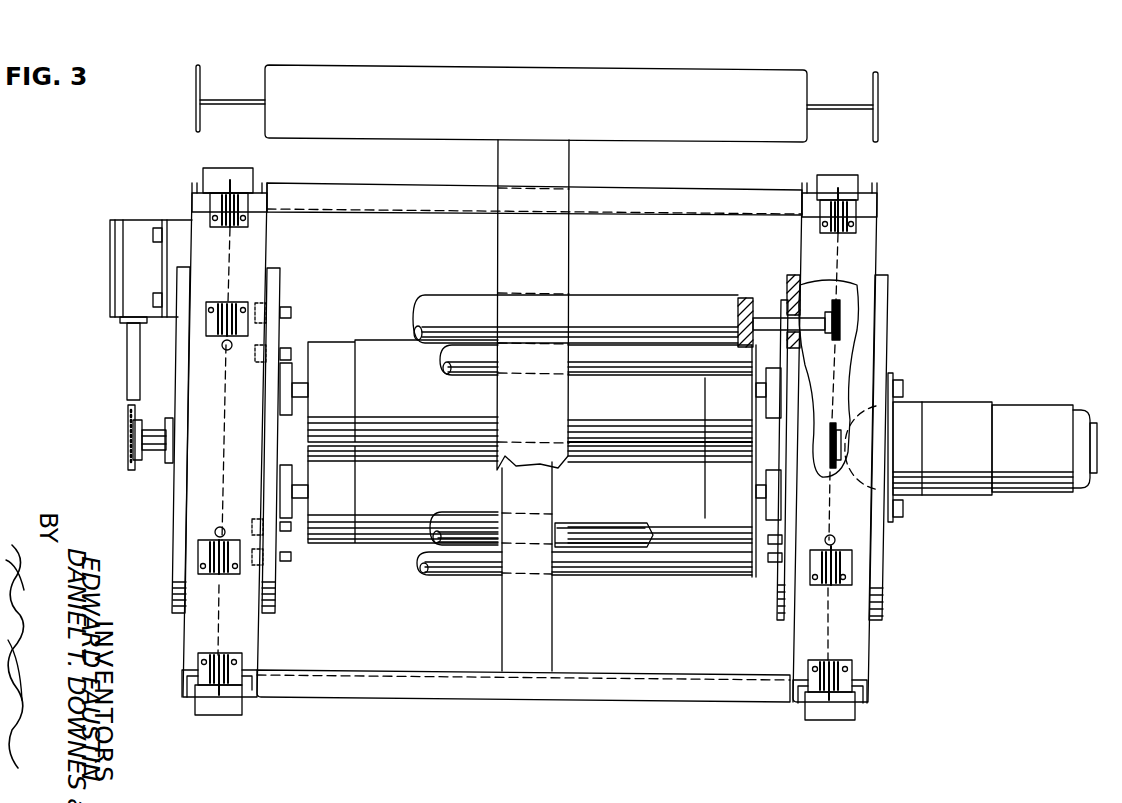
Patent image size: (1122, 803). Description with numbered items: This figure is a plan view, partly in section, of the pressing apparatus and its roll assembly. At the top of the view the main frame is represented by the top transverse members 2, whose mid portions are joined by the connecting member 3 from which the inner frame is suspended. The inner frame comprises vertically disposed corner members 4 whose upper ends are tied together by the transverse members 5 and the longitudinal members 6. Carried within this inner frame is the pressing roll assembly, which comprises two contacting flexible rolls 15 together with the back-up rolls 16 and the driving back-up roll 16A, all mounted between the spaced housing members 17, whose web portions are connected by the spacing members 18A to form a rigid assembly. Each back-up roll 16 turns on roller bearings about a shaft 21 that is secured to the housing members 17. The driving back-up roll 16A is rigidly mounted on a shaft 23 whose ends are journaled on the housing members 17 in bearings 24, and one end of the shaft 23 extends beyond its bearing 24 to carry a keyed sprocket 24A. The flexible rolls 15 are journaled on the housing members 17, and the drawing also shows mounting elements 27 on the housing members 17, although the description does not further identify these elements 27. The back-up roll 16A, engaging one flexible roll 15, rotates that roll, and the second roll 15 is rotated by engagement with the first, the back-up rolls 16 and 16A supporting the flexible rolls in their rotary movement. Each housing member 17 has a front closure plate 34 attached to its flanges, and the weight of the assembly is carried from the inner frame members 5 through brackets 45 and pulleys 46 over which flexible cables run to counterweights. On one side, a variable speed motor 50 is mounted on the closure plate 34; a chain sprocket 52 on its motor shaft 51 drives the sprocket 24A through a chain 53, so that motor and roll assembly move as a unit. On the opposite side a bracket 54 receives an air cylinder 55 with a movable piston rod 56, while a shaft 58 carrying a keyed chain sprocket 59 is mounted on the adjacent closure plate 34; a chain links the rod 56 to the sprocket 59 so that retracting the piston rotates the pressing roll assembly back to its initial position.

The top transverse member 2 is at (666, 132).
The connecting member 3 is at (571, 167).
The inner frame corner member 4 is at (181, 684).
The transverse inner frame member 5 is at (259, 637).
The longitudinal inner frame member 6 is at (348, 184).
The flexible roll 15 is at (530, 441).
The back-up roll 16 is at (695, 376).
The driving back-up roll 16A is at (447, 297).
The housing member 17 is at (164, 516).
The spacing member 18A is at (597, 530).
The shaft 21 is at (288, 557).
The shaft 23 is at (291, 315).
The bearing 24 is at (808, 290).
The sprocket 24A is at (840, 318).
The bearing housing 27 is at (297, 380).
The front closure plate 34 is at (178, 533).
The bracket 45 is at (218, 207).
The pulley 46 is at (228, 182).
The motor 50 is at (992, 447).
The motor shaft 51 is at (841, 442).
The chain sprocket 52 is at (833, 470).
The chain 53 is at (835, 358).
The bracket 54 is at (176, 222).
The air cylinder 55 is at (140, 273).
The piston rod 56 is at (127, 365).
The shaft 58 is at (151, 430).
The chain sprocket 59 is at (127, 466).